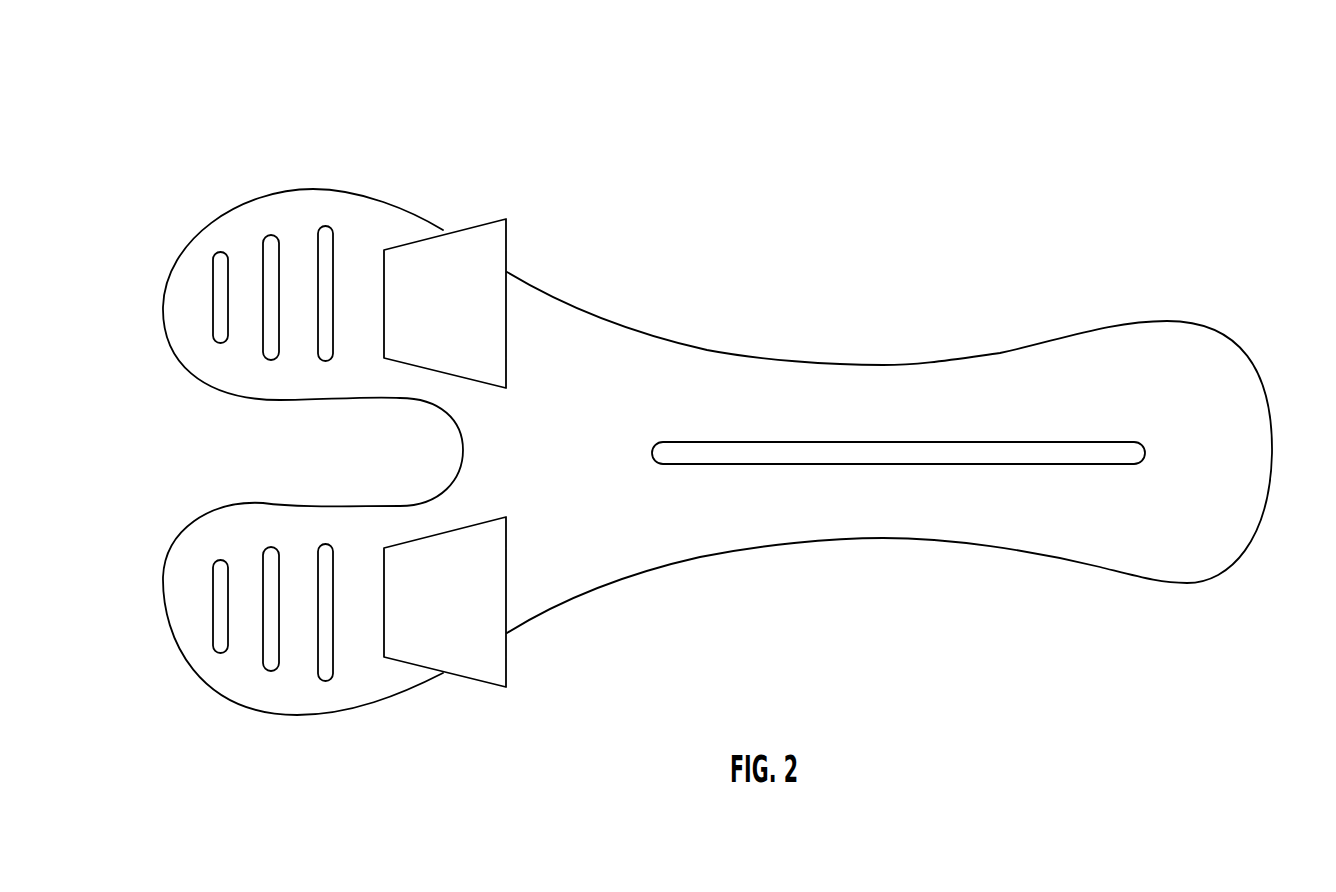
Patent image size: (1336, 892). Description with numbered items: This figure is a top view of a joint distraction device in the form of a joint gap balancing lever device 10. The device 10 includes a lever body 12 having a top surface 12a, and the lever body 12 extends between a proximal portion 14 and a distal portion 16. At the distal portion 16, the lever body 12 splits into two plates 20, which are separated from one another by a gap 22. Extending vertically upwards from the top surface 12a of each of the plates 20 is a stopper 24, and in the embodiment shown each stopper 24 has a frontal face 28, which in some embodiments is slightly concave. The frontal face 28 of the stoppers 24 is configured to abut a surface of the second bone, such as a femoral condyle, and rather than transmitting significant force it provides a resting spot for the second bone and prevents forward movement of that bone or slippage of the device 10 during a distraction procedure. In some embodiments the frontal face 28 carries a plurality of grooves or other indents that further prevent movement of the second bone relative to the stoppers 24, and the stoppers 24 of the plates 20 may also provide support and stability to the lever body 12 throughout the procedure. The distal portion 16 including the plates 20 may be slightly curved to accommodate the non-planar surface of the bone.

The joint gap balancing lever device 10 is at (1040, 168).
The lever body 12 is at (1000, 353).
The top surface 12a is at (708, 402).
The proximal portion 14 is at (1268, 390).
The distal portion 16 is at (540, 617).
The plates 20 is at (232, 200).
The gap 22 is at (337, 462).
The stopper 24 is at (477, 224).
The frontal face 28 is at (463, 658).